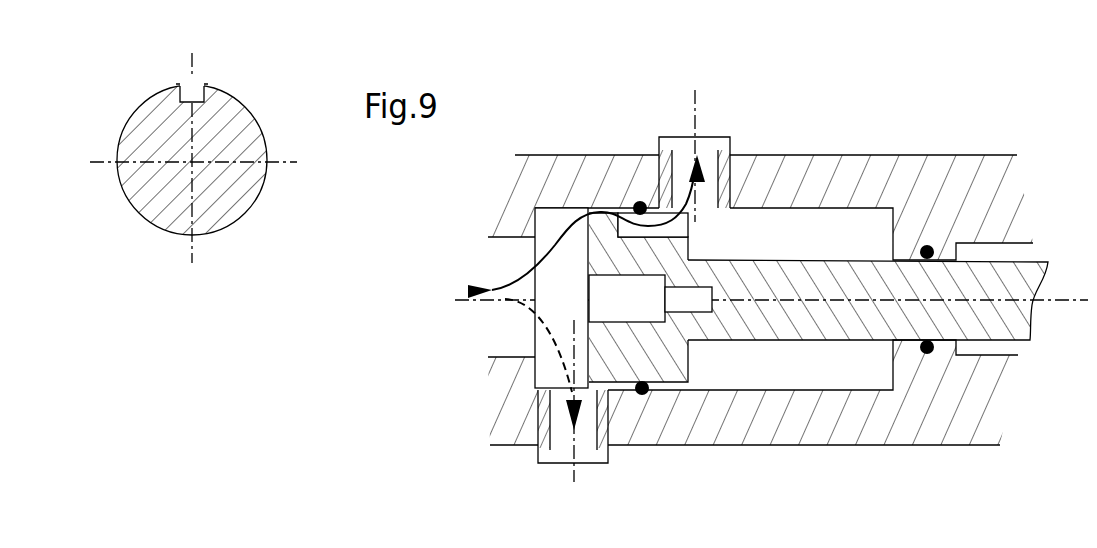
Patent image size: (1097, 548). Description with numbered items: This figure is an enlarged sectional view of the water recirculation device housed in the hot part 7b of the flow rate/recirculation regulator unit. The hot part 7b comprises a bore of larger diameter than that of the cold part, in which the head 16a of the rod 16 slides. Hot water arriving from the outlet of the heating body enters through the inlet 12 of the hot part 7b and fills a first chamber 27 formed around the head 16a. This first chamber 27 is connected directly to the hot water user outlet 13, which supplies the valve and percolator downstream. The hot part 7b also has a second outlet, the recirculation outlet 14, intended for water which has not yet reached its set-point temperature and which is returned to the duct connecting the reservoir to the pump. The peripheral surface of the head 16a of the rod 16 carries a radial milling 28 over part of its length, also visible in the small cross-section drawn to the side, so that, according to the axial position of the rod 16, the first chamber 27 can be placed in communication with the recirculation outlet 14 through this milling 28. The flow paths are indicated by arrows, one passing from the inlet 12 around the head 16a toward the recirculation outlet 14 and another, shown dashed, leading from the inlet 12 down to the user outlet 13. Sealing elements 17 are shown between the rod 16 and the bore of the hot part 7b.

The hot part 7b is at (787, 435).
The inlet 12 is at (537, 364).
The hot water user outlet 13 is at (582, 452).
The recirculation outlet 14 is at (707, 150).
The rod 16 is at (842, 280).
The head of the rod 16a is at (148, 112).
The seal ring 17 is at (932, 352).
The first chamber 27 is at (586, 226).
The radial milling 28 is at (192, 90).